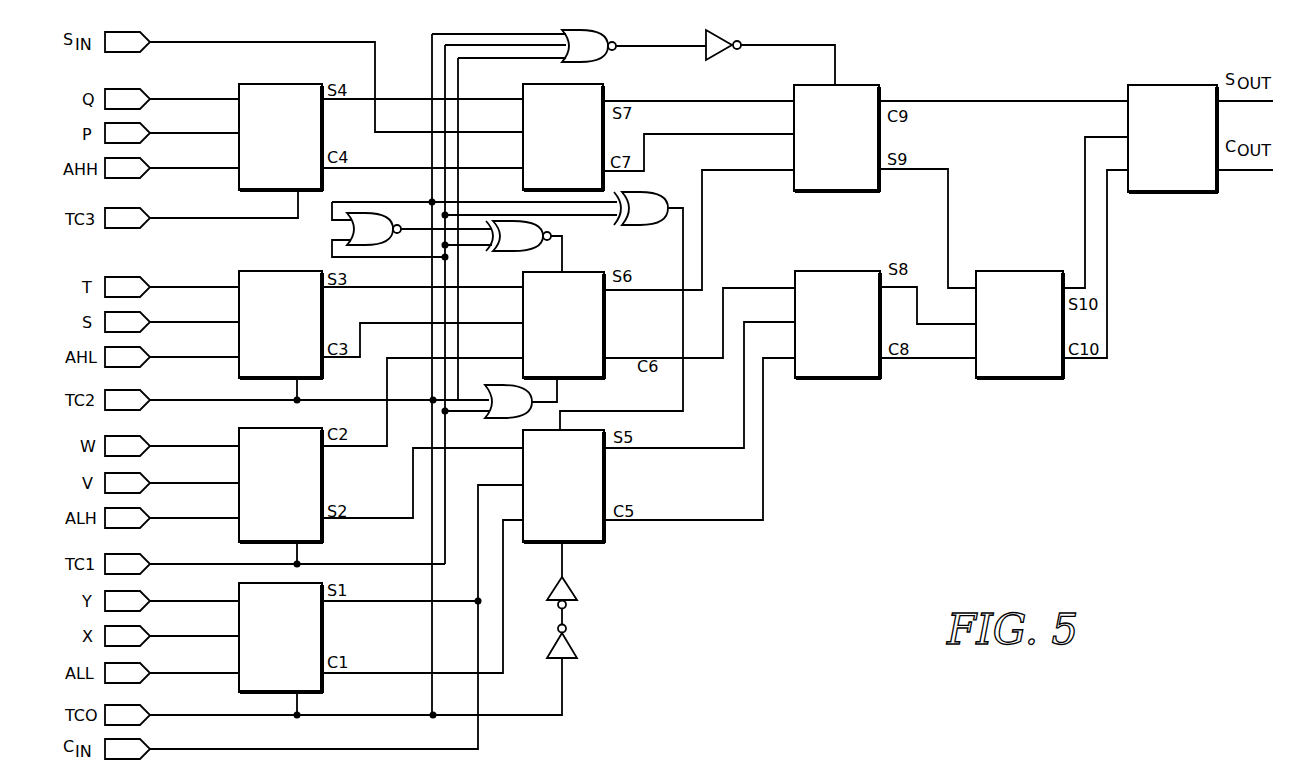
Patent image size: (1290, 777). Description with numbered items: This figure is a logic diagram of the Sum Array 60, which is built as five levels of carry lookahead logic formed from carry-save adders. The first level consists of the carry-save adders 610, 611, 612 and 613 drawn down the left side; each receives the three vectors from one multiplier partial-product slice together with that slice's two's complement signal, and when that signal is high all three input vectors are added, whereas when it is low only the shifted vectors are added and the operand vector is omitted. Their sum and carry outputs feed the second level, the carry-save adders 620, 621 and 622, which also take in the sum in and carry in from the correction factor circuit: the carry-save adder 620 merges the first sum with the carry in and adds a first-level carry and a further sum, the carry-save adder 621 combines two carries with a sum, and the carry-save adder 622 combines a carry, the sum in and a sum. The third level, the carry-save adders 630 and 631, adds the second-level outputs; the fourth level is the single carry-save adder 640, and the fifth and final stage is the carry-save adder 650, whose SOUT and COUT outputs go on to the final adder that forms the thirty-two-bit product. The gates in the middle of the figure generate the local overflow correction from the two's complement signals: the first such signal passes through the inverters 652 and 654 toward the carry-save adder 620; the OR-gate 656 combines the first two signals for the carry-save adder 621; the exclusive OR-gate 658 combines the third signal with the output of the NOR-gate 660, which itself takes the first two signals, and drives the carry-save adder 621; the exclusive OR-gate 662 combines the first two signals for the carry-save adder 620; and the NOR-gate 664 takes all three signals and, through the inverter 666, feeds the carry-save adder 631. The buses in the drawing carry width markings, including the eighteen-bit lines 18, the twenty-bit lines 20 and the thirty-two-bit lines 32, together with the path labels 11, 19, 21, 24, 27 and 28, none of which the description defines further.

The carry input bus 11 is at (207, 758).
The 18-bit data bus 18 is at (263, 33).
The carry output bus of CSA 631 19 is at (962, 110).
The 20-bit data bus 20 is at (165, 138).
The carry output bus of CSA 621 21 is at (613, 363).
The carry output bus of CSA 620 24 is at (675, 523).
The carry output bus 27 is at (1223, 162).
The carry output bus of CSA 640 28 is at (1100, 242).
The 32-bit data bus 32 is at (677, 453).
The sum array 60 is at (849, 497).
The carry-save adder 610 is at (260, 677).
The carry-save adder 611 is at (250, 525).
The carry-save adder 612 is at (250, 363).
The carry-save adder 613 is at (250, 172).
The carry-save adder 620 is at (593, 530).
The carry-save adder 621 is at (573, 280).
The carry-save adder 622 is at (580, 103).
The carry-save adder 630 is at (828, 368).
The carry-save adder 631 is at (822, 178).
The carry-save adder 640 is at (1028, 366).
The carry-save adder 650 is at (1178, 57).
The inverter 652 is at (573, 645).
The inverter 654 is at (573, 590).
The OR-gate 656 is at (507, 408).
The exclusive OR-gate 658 is at (518, 247).
The NOR-gate 660 is at (367, 238).
The exclusive OR-gate 662 is at (653, 210).
The NOR-gate 664 is at (603, 33).
The inverter 666 is at (720, 60).